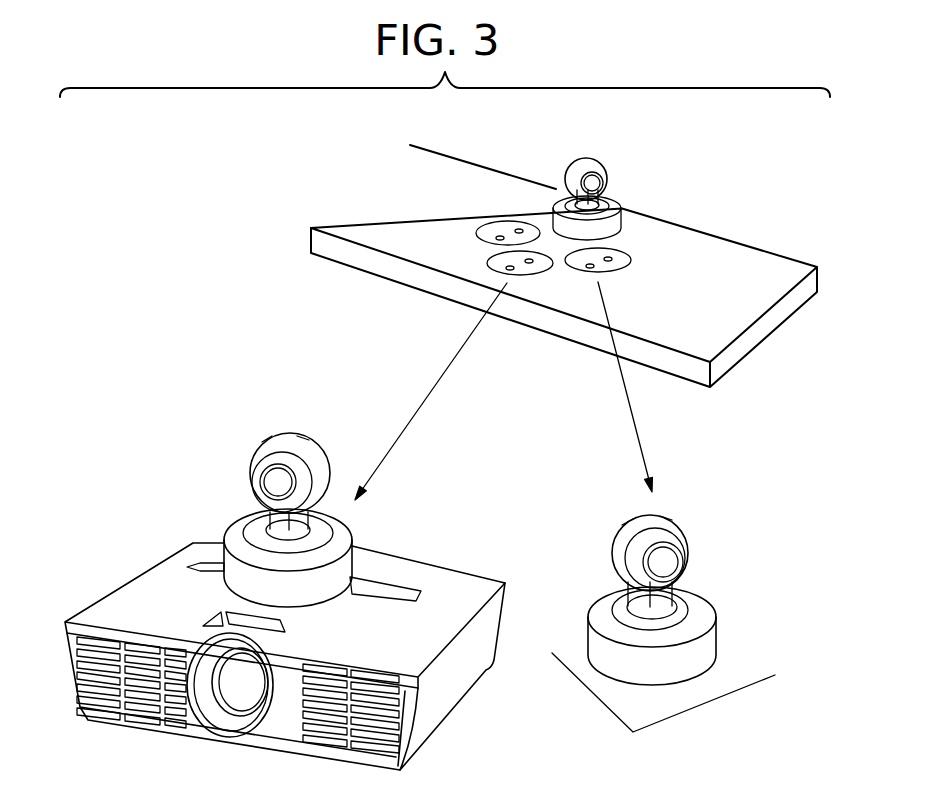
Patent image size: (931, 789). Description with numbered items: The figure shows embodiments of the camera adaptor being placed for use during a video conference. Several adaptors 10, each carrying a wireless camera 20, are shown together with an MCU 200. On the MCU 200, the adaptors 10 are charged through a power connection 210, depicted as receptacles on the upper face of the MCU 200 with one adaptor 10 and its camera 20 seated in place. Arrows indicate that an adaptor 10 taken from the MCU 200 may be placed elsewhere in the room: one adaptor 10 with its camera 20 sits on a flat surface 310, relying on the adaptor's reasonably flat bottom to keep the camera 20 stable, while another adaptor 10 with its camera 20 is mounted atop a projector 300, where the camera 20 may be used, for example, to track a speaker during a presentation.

The adaptor 10 is at (623, 217).
The wireless camera 20 is at (602, 160).
The MCU 200 is at (770, 337).
The power connection 210 is at (523, 270).
The projector 300 is at (452, 710).
The flat surface 310 is at (722, 683).